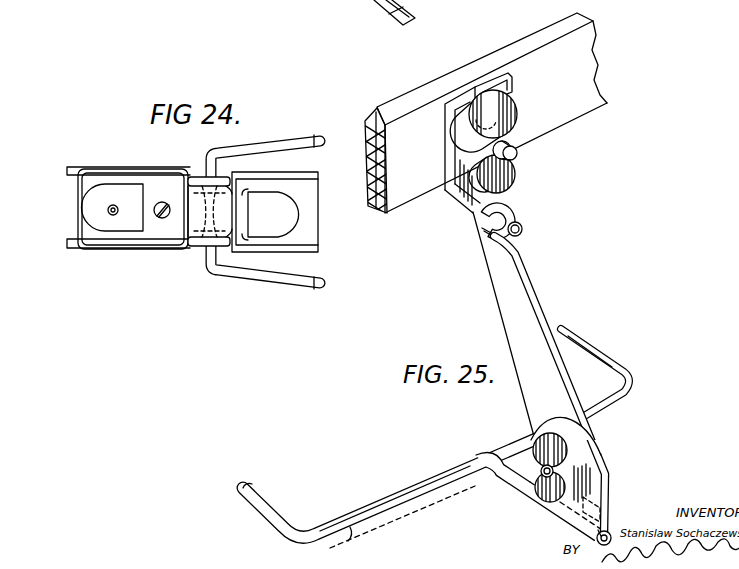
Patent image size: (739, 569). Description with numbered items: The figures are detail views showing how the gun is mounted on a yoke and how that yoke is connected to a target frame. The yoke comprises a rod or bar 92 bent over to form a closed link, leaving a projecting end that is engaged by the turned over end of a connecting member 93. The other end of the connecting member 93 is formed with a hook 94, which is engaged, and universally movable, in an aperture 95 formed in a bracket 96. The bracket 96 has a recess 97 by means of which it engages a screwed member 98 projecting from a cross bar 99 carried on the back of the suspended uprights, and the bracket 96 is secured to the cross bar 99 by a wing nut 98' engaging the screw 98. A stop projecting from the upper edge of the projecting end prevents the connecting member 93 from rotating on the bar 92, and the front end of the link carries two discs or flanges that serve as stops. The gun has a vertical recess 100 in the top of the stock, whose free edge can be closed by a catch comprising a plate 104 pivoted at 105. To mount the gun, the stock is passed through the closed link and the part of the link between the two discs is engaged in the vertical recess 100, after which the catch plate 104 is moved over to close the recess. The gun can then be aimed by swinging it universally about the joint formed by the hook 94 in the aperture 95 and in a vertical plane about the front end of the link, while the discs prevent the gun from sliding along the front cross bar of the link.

In FIG. 24, the rod or bar 92 is at (263, 280).
In FIG. 25, the rod or bar 92 is at (270, 512).
In FIG. 25, the connecting member 93 is at (531, 329).
In FIG. 25, the hook 94 is at (522, 230).
In FIG. 25, the aperture 95 is at (483, 211).
In FIG. 25, the bracket 96 is at (460, 180).
In FIG. 25, the recess 97 is at (475, 108).
In FIG. 25, the screwed member 98 is at (522, 159).
In FIG. 25, the wing nut 98' is at (508, 120).
In FIG. 25, the cross bar 99 is at (578, 100).
In FIG. 24, the vertical recess 100 is at (206, 180).
In FIG. 24, the plate 104 is at (135, 224).
In FIG. 24, the pivot 105 is at (158, 202).